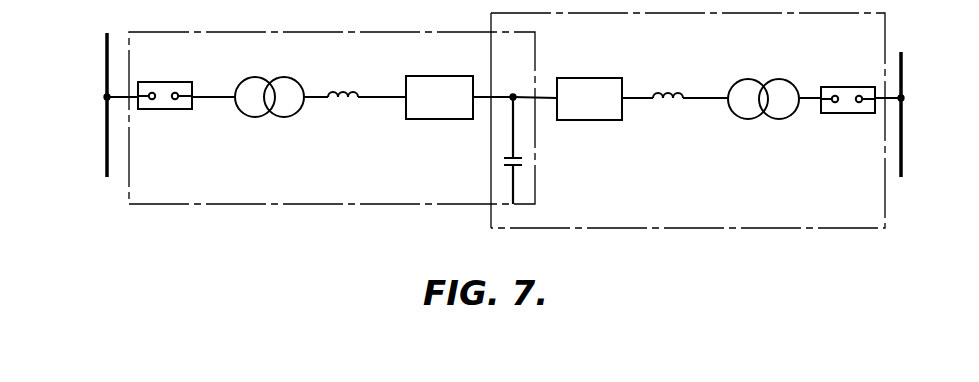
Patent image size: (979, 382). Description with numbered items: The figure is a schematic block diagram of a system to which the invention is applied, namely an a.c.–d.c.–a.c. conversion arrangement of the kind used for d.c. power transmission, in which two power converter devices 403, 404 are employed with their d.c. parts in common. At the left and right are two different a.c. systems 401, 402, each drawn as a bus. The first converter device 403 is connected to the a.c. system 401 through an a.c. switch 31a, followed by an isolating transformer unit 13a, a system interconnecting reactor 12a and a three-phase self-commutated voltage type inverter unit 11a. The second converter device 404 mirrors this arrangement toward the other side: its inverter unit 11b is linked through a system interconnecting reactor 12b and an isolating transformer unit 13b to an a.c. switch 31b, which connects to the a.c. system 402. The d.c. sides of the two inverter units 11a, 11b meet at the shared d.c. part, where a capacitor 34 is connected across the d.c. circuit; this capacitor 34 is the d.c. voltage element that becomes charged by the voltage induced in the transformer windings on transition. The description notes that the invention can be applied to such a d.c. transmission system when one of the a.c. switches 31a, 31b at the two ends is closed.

The a.c. system 401 is at (105, 156).
The a.c. system 402 is at (905, 143).
The power converter device 403 is at (320, 208).
The power converter device 404 is at (722, 232).
The a.c. switch 31a is at (163, 111).
The isolating transformer unit 13a is at (267, 117).
The system interconnecting reactor 12a is at (342, 105).
The self-commutated voltage type inverter unit 11a is at (432, 120).
The capacitor 34 is at (523, 163).
The self-commutated voltage type inverter unit 11b is at (607, 121).
The system interconnecting reactor 12b is at (676, 106).
The isolating transformer unit 13b is at (764, 122).
The a.c. switch 31b is at (845, 115).